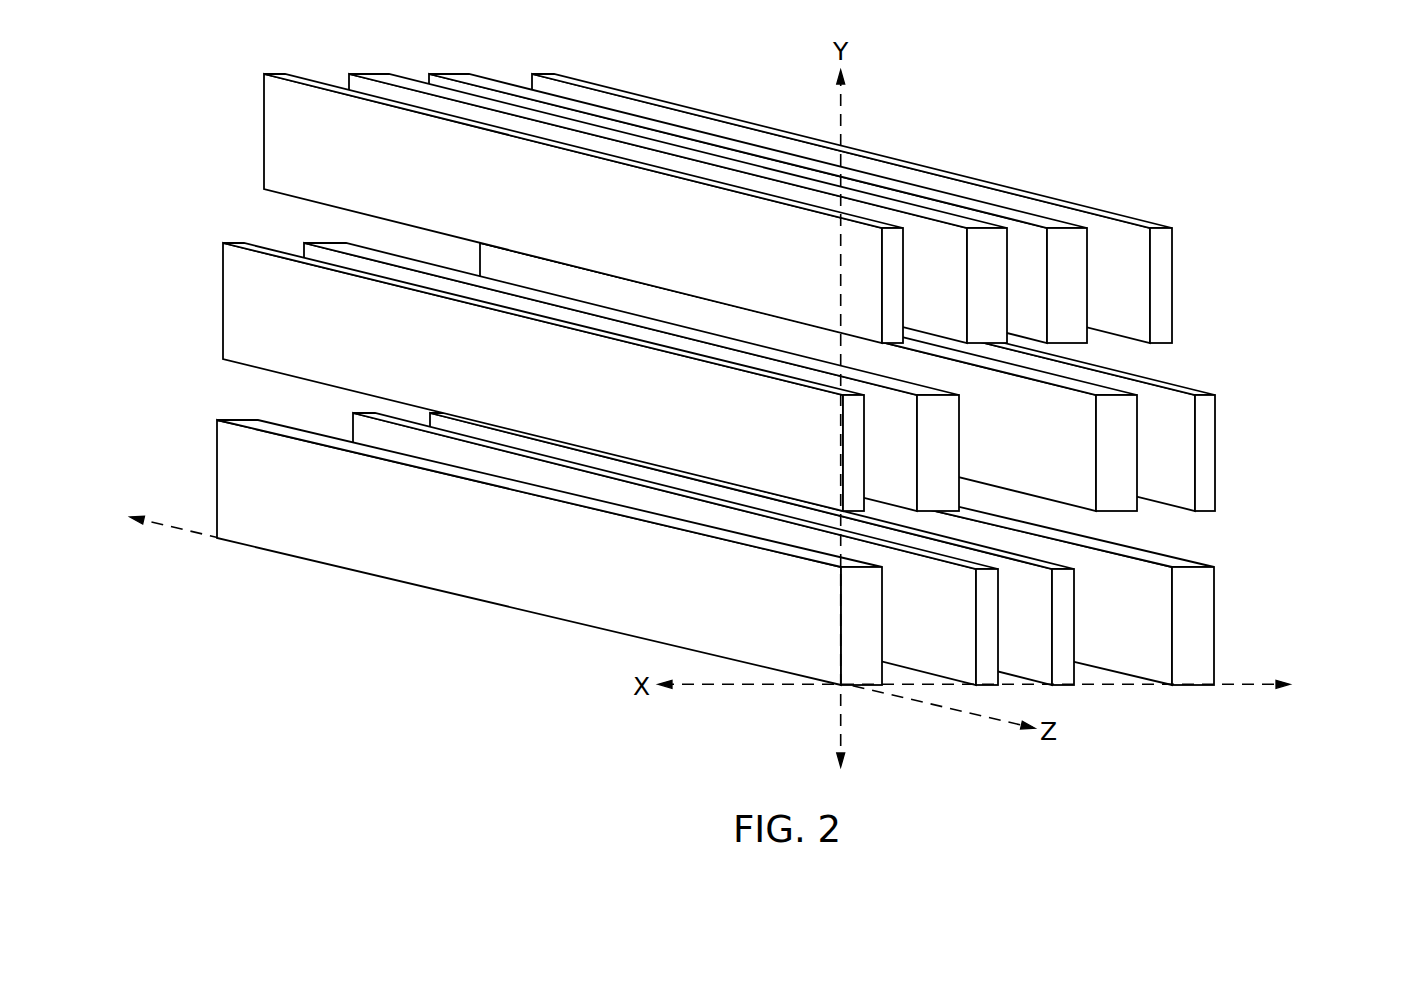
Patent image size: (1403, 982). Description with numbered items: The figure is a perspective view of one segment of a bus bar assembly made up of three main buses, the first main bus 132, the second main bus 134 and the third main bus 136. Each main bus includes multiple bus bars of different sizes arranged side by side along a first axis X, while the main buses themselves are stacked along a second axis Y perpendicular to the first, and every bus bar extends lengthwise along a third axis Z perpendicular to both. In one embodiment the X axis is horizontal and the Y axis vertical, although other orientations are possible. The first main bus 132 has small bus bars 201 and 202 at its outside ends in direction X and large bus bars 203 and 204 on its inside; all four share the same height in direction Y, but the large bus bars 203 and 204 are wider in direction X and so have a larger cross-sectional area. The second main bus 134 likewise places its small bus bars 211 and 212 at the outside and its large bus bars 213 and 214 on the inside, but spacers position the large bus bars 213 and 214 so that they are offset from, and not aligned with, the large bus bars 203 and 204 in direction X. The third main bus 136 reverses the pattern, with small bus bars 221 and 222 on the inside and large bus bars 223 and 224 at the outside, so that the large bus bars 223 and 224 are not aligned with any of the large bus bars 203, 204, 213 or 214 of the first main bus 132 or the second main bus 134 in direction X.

The first main bus 132 is at (790, 208).
The second main bus 134 is at (795, 377).
The third main bus 136 is at (792, 549).
The small bus bar 201 is at (878, 226).
The small bus bar 202 is at (1142, 220).
The large bus bar 203 is at (953, 222).
The large bus bar 204 is at (1047, 220).
The small bus bar 211 is at (855, 441).
The small bus bar 212 is at (1202, 481).
The large bus bar 213 is at (947, 415).
The large bus bar 214 is at (1113, 461).
The small bus bar 221 is at (987, 608).
The small bus bar 222 is at (1062, 600).
The large bus bar 223 is at (852, 608).
The large bus bar 224 is at (1202, 625).